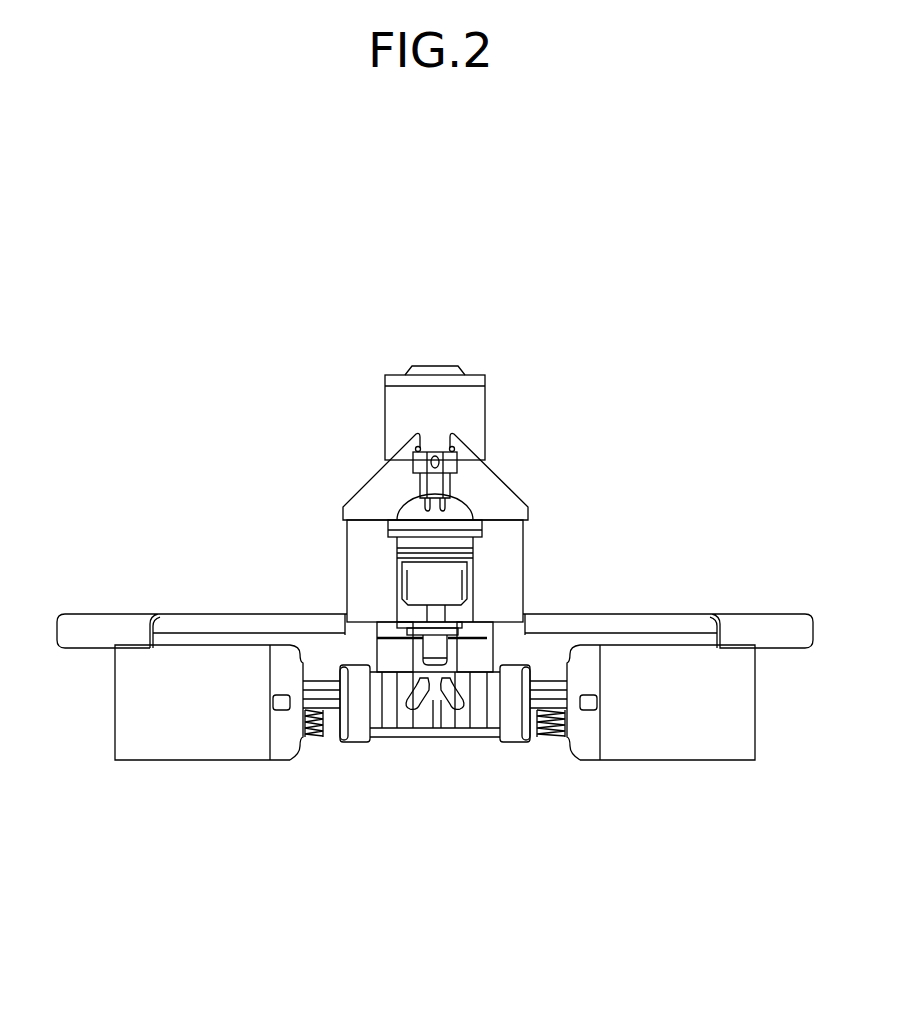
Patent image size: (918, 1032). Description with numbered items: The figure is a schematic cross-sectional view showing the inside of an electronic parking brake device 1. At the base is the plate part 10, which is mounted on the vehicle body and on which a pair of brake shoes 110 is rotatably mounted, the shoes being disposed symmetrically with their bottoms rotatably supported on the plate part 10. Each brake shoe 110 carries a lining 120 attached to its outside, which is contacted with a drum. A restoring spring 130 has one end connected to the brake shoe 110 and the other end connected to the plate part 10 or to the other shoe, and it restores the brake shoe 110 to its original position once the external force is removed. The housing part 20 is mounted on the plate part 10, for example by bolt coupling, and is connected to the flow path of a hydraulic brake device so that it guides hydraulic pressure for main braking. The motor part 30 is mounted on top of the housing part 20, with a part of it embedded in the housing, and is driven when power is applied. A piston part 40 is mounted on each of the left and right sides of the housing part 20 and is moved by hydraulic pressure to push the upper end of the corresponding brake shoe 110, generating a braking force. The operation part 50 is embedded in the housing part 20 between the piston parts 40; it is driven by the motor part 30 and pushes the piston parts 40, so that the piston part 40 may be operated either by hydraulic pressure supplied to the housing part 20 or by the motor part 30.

The electronic parking brake device 1 is at (755, 284).
The plate part 10 is at (682, 614).
The housing part 20 is at (347, 563).
The motor part 30 is at (385, 378).
The piston part 40 is at (357, 743).
The operation part 50 is at (437, 714).
The brake shoe 110 is at (592, 762).
The lining 120 is at (693, 750).
The restoring spring 130 is at (545, 742).